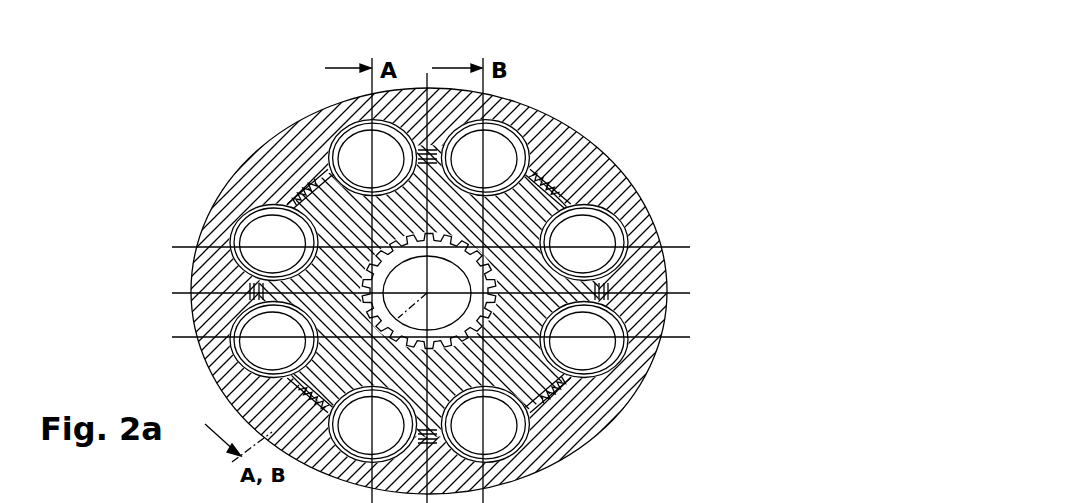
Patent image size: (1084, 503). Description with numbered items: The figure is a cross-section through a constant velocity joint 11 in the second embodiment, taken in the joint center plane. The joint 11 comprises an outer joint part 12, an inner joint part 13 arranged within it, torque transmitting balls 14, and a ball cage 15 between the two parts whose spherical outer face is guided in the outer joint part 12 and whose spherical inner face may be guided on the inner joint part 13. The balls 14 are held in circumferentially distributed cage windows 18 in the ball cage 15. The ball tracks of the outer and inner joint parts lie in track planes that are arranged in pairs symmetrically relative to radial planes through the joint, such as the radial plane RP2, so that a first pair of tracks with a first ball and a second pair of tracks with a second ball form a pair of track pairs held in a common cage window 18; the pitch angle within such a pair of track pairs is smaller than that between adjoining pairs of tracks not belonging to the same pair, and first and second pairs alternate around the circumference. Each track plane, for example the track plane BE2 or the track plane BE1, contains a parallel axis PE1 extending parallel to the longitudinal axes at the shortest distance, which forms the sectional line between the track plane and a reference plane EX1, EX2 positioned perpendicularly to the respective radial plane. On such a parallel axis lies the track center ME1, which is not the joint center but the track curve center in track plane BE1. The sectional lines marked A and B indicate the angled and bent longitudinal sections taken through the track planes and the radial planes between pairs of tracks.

The joint 11 is at (605, 151).
The outer joint part 12 is at (560, 146).
The inner joint part 13 is at (548, 202).
The torque transmitting balls 14 is at (429, 267).
The ball cage 15 is at (548, 385).
The cage window 18 is at (575, 382).
The reference plane EX1 is at (186, 292).
The reference plane EX2 is at (432, 76).
The radial plane RP2 is at (676, 293).
The track plane BE2 is at (676, 247).
The track center ME1 is at (262, 318).
The parallel axis PE1 is at (353, 233).
The track plane BE1 is at (372, 493).